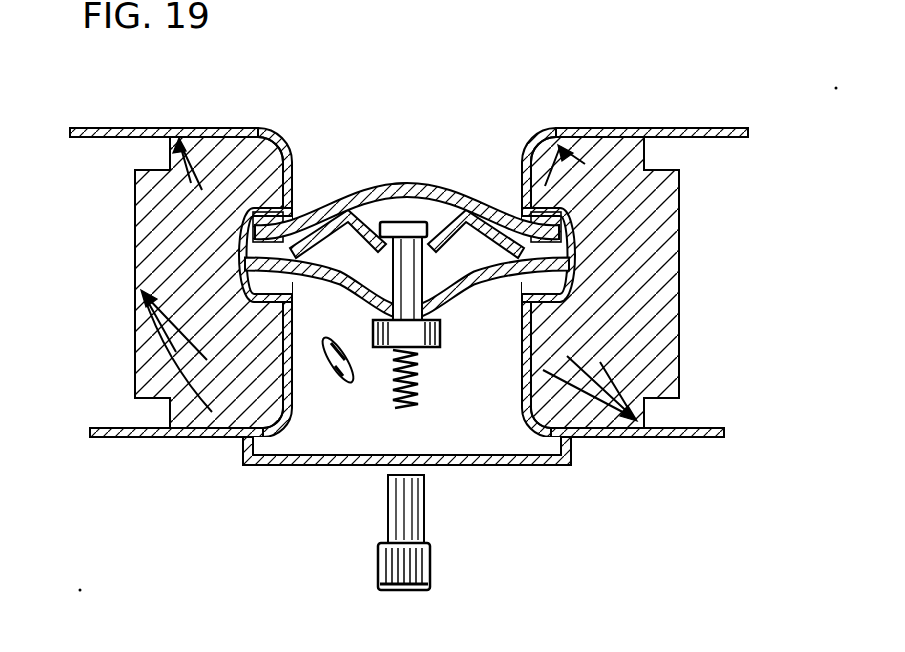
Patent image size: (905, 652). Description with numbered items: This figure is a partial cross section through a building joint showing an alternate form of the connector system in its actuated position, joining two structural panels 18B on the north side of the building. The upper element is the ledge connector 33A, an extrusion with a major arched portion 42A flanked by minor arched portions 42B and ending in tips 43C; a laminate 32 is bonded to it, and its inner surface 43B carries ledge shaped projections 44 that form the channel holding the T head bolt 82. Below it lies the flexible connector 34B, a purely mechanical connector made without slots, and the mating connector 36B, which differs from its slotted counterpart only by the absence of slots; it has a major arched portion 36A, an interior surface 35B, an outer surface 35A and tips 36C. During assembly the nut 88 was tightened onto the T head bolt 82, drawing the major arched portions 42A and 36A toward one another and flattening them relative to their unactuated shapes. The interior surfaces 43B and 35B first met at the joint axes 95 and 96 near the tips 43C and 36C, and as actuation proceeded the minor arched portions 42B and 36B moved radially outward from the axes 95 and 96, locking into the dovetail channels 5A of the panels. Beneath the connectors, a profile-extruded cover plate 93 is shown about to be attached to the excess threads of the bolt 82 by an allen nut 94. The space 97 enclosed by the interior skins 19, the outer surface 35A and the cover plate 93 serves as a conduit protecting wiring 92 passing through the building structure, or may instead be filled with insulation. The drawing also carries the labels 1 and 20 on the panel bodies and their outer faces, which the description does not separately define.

The body member 1 is at (150, 217).
The structural panel 18B is at (403, 279).
The interior skin 19 is at (104, 438).
The top plate 20 is at (113, 140).
The laminate 32 is at (469, 187).
The ledge connector 33A is at (437, 186).
The flexible connector 34B is at (545, 298).
The outer surface 35A is at (522, 312).
The interior surface 35B is at (444, 246).
The major arched portion 36A is at (427, 316).
The connector 36B is at (295, 284).
The tip 36C is at (253, 298).
The major arched portion 42A is at (400, 186).
The minor arched portion 42B is at (280, 218).
The inner surface 43B is at (345, 236).
The tip 43C is at (557, 240).
The ledge shaped projection 44 is at (330, 212).
The dovetail channel 5A is at (247, 257).
The T head bolt 82 is at (395, 220).
The nut 88 is at (412, 333).
The wiring 92 is at (333, 368).
The cover plate 93 is at (270, 463).
The allen nut 94 is at (400, 517).
The joint axis 95 is at (252, 274).
The joint axis 96 is at (556, 242).
The space 97 is at (484, 438).